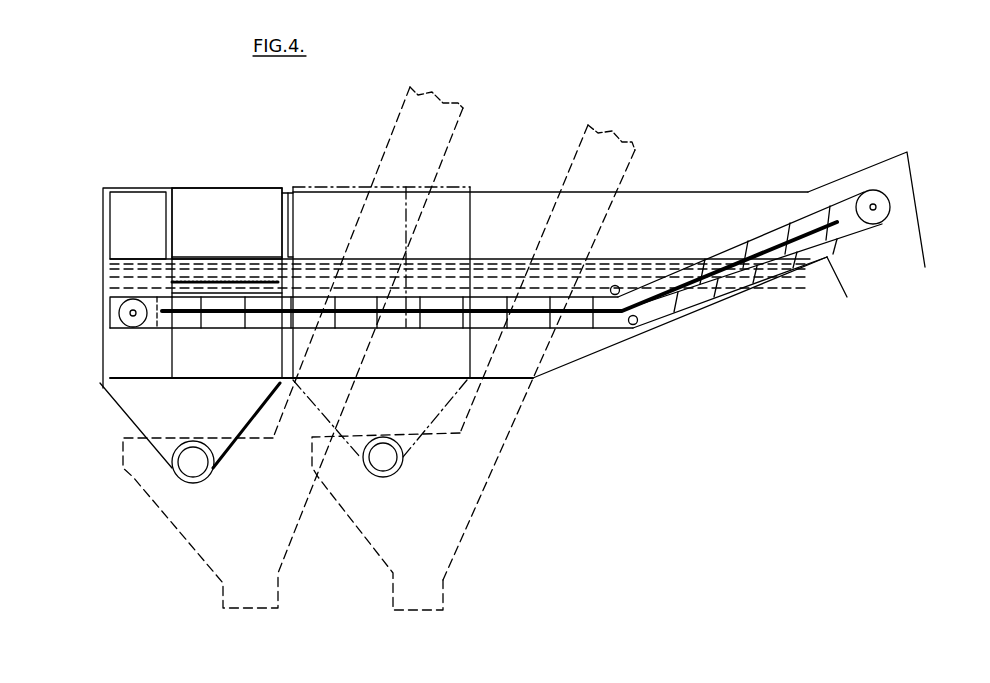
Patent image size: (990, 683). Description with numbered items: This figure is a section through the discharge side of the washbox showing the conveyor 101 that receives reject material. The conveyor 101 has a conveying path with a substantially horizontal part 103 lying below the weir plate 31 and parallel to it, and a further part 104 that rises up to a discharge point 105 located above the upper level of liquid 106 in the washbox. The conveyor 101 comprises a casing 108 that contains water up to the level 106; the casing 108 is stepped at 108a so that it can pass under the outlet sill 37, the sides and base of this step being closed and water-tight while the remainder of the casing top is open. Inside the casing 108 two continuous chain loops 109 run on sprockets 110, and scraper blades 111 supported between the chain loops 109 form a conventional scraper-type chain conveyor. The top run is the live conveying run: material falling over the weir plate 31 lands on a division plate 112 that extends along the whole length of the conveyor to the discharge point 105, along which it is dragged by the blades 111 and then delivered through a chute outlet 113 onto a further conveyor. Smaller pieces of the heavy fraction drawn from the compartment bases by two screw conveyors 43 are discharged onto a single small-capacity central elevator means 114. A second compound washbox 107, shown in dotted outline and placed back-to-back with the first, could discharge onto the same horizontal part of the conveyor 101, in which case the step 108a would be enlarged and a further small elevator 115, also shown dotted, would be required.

The weir plate 31 is at (185, 273).
The outlet sill 37 is at (203, 257).
The screw conveyor 43 is at (188, 460).
The conveyor 101 is at (101, 313).
The horizontal part 103 is at (240, 292).
The further part 104 is at (760, 232).
The discharge point 105 is at (890, 173).
The upper level of liquid 106 is at (130, 258).
The second compound washbox 107 is at (462, 184).
The casing 108 is at (108, 293).
The step 108a is at (330, 168).
The chain loops 109 is at (165, 286).
The sprockets 110 is at (132, 322).
The scraper blades 111 is at (219, 313).
The division plate 112 is at (172, 330).
The chute outlet 113 is at (840, 275).
The elevator means 114 is at (400, 130).
The further elevator 115 is at (470, 512).